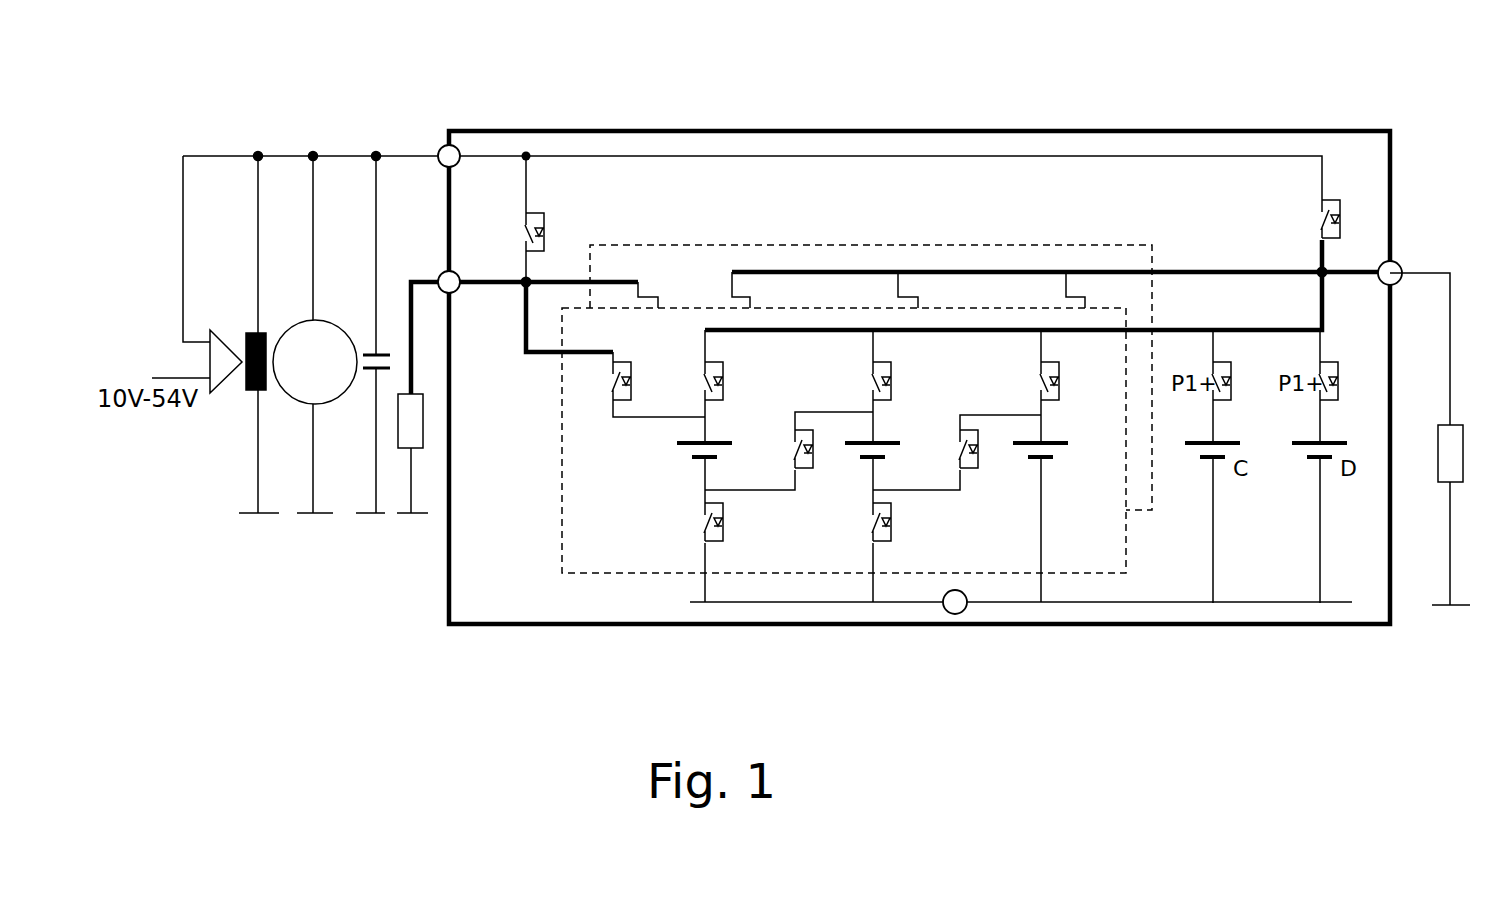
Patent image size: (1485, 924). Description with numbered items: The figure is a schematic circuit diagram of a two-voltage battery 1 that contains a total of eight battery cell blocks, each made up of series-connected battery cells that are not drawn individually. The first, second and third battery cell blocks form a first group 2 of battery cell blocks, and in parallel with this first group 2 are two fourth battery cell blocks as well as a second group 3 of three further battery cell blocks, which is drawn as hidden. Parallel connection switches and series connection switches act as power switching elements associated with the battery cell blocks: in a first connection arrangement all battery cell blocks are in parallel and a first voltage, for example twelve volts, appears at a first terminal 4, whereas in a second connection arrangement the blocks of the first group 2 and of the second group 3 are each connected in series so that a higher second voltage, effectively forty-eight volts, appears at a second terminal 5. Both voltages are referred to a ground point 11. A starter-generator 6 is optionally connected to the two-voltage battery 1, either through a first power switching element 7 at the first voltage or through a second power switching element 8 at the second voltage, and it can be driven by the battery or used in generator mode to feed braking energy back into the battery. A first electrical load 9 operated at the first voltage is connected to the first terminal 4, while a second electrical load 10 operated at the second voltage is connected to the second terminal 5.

The two-voltage battery 1 is at (1138, 130).
The first group of battery cell blocks 2 is at (603, 574).
The second group of battery cell blocks 3 is at (731, 245).
The first terminal 4 is at (1397, 265).
The second terminal 5 is at (466, 273).
The starter-generator 6 is at (315, 362).
The first power switching element 7 is at (1314, 207).
The second power switching element 8 is at (556, 221).
The first electrical load 9 is at (1448, 455).
The second electrical load 10 is at (413, 422).
The ground point 11 is at (955, 614).